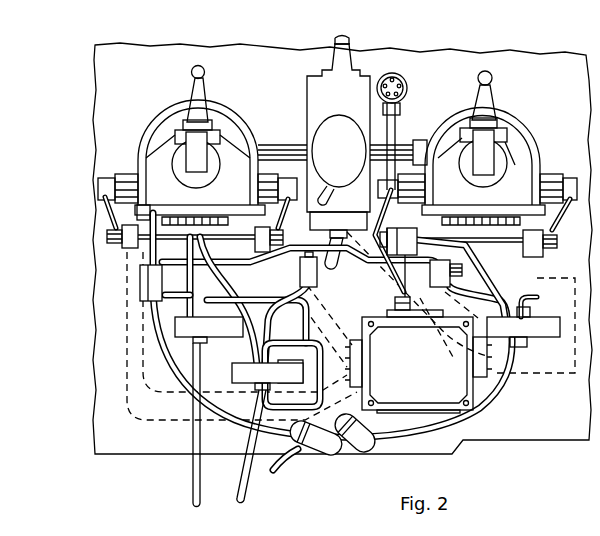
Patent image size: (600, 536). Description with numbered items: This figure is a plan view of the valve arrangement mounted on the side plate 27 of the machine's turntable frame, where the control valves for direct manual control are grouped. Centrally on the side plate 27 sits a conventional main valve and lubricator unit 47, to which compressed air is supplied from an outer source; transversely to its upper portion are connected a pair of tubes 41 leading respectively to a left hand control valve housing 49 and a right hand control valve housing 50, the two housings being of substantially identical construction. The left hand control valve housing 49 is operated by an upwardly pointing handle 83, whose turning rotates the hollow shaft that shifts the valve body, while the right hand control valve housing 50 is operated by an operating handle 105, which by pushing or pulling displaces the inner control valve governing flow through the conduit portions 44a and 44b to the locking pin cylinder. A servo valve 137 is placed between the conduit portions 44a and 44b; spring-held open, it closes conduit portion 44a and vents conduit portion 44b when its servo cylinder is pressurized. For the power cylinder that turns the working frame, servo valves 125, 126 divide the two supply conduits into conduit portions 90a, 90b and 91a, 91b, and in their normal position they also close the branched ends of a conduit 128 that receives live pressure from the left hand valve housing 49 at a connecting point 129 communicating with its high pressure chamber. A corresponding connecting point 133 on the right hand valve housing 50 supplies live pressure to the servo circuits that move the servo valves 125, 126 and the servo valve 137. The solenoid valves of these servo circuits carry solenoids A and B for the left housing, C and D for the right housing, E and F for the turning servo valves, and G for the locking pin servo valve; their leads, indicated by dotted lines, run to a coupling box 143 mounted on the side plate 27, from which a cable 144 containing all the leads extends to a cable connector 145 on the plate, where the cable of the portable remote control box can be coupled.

The side plate 27 is at (537, 428).
The tubes 41 is at (287, 150).
The main valve and lubricator unit 47 is at (322, 100).
The left hand control valve housing 49 is at (225, 158).
The right hand control valve housing 50 is at (515, 165).
The handle 83 is at (200, 92).
The operating handle 105 is at (490, 98).
The connecting point 129 is at (163, 195).
The connecting point 133 is at (527, 222).
The cable 144 is at (397, 120).
The cable connector 145 is at (403, 80).
The conduit portion 90a is at (190, 257).
The conduit portion 91a is at (223, 287).
The conduit portion 44a is at (482, 272).
The conduit portion 44b is at (497, 397).
The conduit 128 is at (167, 352).
The servo valve 125 is at (228, 325).
The servo valve 126 is at (263, 375).
The servo valve 137 is at (537, 325).
The coupling box 143 is at (423, 388).
The conduit portion 90b is at (200, 480).
The conduit portion 91b is at (242, 485).
The solenoid A is at (127, 238).
The solenoid B is at (262, 240).
The solenoid C is at (410, 233).
The solenoid D is at (537, 248).
The solenoid E is at (147, 280).
The solenoid F is at (310, 268).
The solenoid G is at (437, 270).